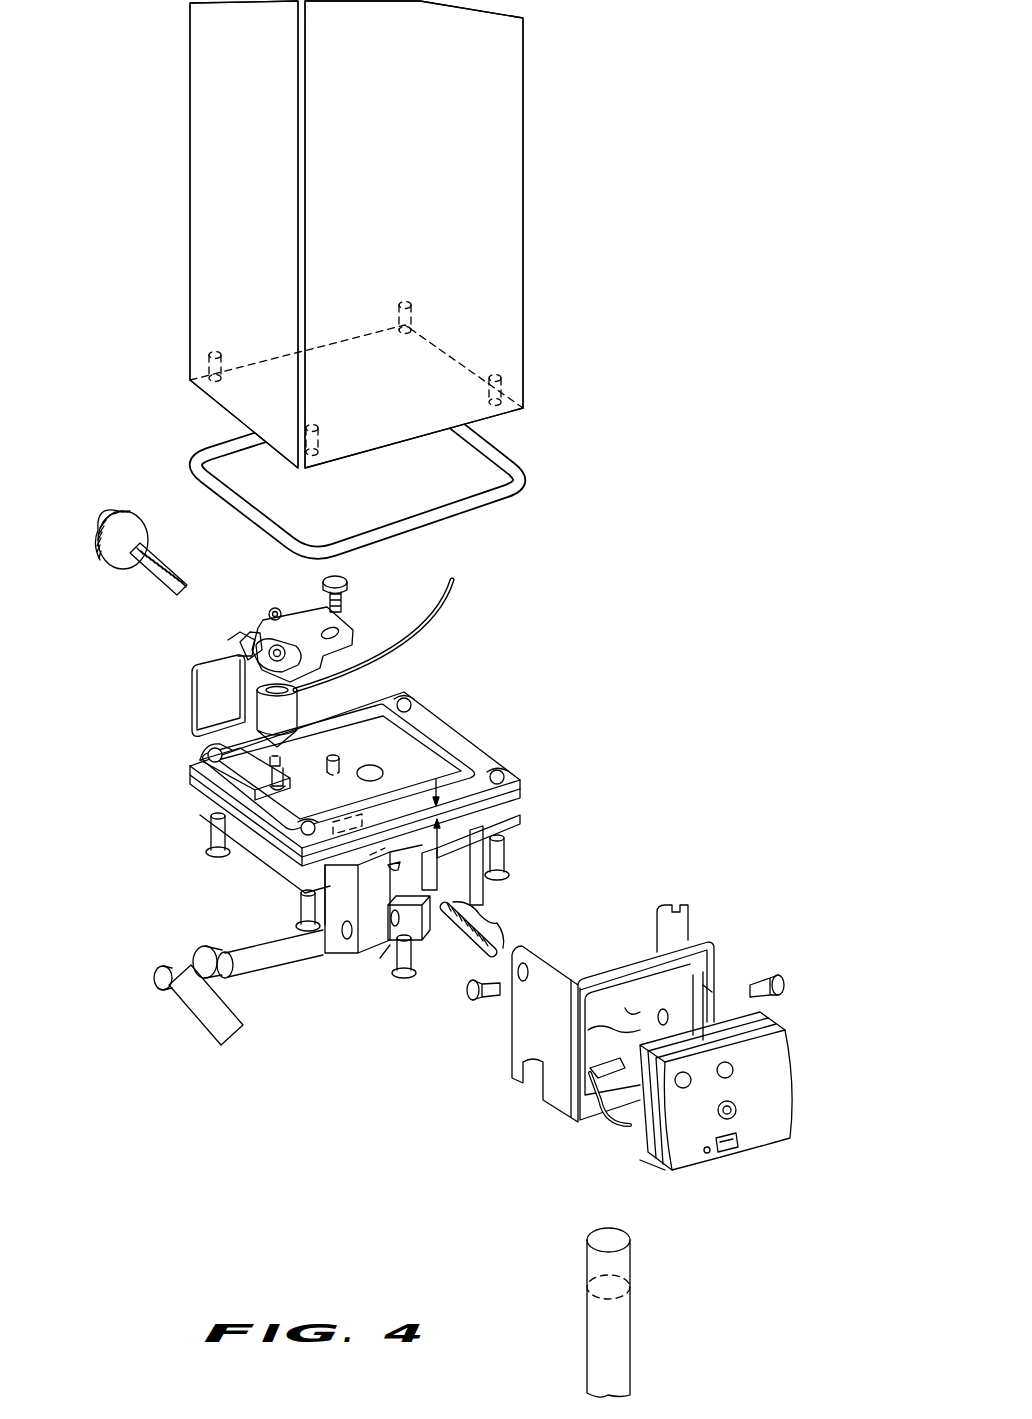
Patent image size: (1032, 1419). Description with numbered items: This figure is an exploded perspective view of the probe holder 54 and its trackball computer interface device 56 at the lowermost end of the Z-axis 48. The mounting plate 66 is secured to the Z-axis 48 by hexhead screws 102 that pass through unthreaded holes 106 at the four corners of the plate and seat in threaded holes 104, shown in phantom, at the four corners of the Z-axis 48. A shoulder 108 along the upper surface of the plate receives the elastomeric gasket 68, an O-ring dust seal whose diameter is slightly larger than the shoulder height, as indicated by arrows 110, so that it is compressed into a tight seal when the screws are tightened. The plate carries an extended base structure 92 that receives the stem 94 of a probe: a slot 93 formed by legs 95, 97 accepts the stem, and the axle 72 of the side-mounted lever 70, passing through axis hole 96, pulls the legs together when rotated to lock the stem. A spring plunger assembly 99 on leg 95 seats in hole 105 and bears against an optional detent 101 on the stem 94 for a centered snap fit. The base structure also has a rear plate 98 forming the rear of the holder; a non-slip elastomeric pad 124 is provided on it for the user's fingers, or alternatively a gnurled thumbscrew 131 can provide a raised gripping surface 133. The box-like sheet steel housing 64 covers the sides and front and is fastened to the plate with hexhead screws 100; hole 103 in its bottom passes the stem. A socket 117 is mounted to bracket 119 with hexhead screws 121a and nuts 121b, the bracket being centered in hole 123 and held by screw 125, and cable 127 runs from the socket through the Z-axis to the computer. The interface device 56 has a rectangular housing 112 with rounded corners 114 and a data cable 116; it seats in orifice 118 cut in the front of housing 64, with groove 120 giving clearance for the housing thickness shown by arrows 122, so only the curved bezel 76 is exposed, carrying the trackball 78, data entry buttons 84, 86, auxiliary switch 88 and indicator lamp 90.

The Z-axis 48 is at (447, 182).
The threaded holes 104 is at (225, 362).
The elastomeric gasket 68 is at (500, 462).
The raised gripping surface 133 is at (131, 509).
The gnurled thumbscrew 131 is at (165, 531).
The screw 125 is at (352, 588).
The nuts 121b is at (271, 608).
The bracket 119 is at (352, 625).
The cable 127 is at (458, 590).
The non-slip elastomeric pad 124 is at (192, 680).
The socket 117 is at (300, 702).
The holes 106 is at (190, 735).
The shoulder 108 is at (445, 733).
The probe holder 54 is at (714, 694).
The hole 123 is at (300, 788).
The arrows 110 is at (436, 778).
The hole 105 is at (395, 870).
The mounting plate 66 is at (530, 790).
The hexhead screws 121a is at (215, 792).
The hexhead screws 102 is at (208, 836).
The rear plate 98 is at (312, 878).
The slot 93 is at (398, 906).
The spring plunger assembly 99 is at (497, 922).
The leg 97 is at (425, 950).
The axis hole 96 is at (346, 942).
The axle 72 is at (252, 962).
The base structure 92 is at (368, 945).
The leg 95 is at (382, 952).
The lever 70 is at (232, 1047).
The hexhead screws 100 is at (478, 1002).
The hole 103 is at (610, 1045).
The orifice 118 is at (632, 1010).
The housing 64 is at (716, 960).
The arrows 122 is at (706, 998).
The housing 112 is at (745, 1022).
The rounded corners 114 is at (775, 1025).
The trackball computer interface device 56 is at (743, 1098).
The bezel 76 is at (765, 1110).
The trackball 78 is at (737, 1112).
The data entry button 86 is at (733, 1073).
The data entry button 84 is at (686, 1089).
The auxiliary switch 88 is at (736, 1151).
The indicator lamp 90 is at (707, 1155).
The data cable 116 is at (612, 1125).
The groove 120 is at (650, 1175).
The detent 101 is at (632, 1290).
The stem 94 is at (640, 1312).